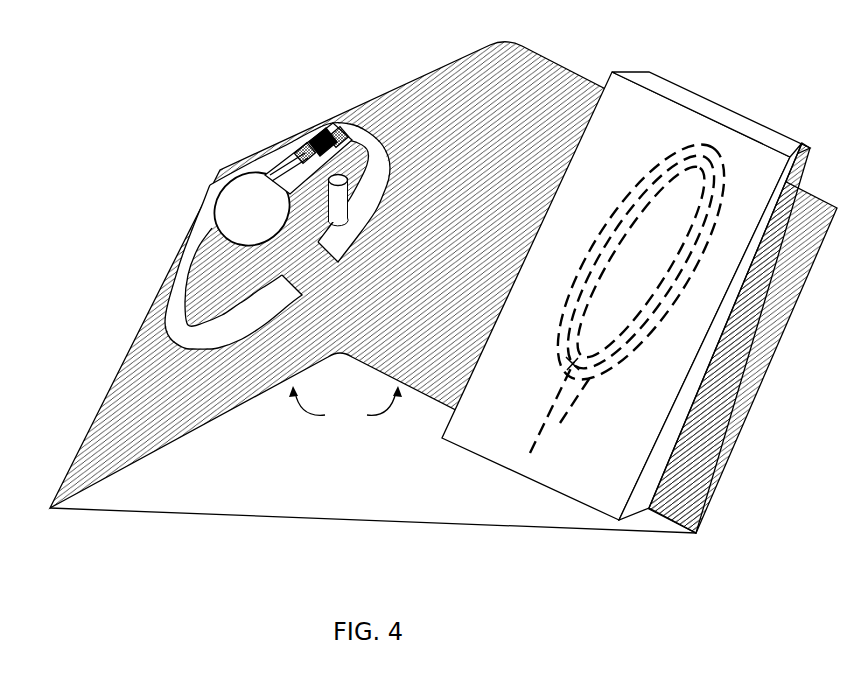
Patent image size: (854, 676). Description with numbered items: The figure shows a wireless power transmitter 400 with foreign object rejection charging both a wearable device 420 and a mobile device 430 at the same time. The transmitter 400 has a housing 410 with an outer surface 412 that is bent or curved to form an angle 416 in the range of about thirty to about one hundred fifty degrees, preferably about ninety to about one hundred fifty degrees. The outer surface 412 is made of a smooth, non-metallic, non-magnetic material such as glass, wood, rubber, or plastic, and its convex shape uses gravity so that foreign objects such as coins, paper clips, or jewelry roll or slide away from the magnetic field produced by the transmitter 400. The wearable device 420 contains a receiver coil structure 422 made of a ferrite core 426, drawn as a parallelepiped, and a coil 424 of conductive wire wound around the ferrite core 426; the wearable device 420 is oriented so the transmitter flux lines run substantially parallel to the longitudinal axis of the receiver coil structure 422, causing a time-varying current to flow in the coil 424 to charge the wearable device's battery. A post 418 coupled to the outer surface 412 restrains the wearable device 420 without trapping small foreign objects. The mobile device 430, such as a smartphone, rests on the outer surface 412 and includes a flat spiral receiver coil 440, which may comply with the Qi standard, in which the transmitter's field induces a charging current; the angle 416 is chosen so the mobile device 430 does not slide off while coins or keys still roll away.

The wireless power transmitter 400 is at (108, 290).
The housing 410 is at (187, 515).
The outer surface 412 is at (137, 388).
The angle 416 is at (345, 406).
The post 418 is at (320, 205).
The wearable device 420 is at (187, 278).
The receiver coil structure 422 is at (285, 140).
The coil 424 is at (310, 133).
The ferrite core 426 is at (330, 124).
The mobile device 430 is at (626, 331).
The flat spiral receiver coil 440 is at (630, 179).